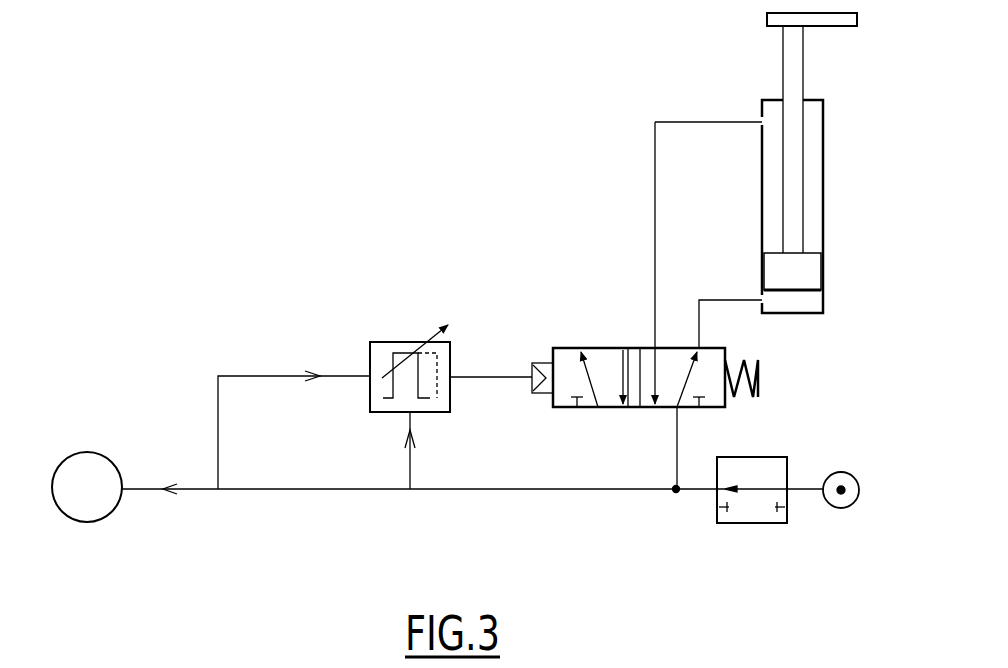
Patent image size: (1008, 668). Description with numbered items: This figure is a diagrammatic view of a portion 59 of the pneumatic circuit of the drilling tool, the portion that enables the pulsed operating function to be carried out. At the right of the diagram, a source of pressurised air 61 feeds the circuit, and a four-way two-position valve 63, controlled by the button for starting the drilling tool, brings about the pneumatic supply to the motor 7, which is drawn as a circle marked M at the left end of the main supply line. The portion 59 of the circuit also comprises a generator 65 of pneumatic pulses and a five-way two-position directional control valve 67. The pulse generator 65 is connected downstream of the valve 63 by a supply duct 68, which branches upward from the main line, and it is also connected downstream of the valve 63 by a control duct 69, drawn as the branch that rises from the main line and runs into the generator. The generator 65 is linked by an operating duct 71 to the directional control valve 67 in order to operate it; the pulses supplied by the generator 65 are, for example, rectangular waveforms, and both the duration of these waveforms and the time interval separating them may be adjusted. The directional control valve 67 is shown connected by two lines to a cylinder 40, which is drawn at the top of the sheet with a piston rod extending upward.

The motor 7 is at (98, 457).
The hydraulic cylinder 40 is at (835, 198).
The portion of the pneumatic circuit 59 is at (492, 327).
The source of pressurised air 61 is at (855, 477).
The four-way two-position valve 63 is at (745, 527).
The generator of pneumatic pulses 65 is at (398, 333).
The five-way two-position directional control valve 67 is at (603, 340).
The supply duct 68 is at (410, 468).
The control duct 69 is at (271, 376).
The operating duct 71 is at (482, 379).